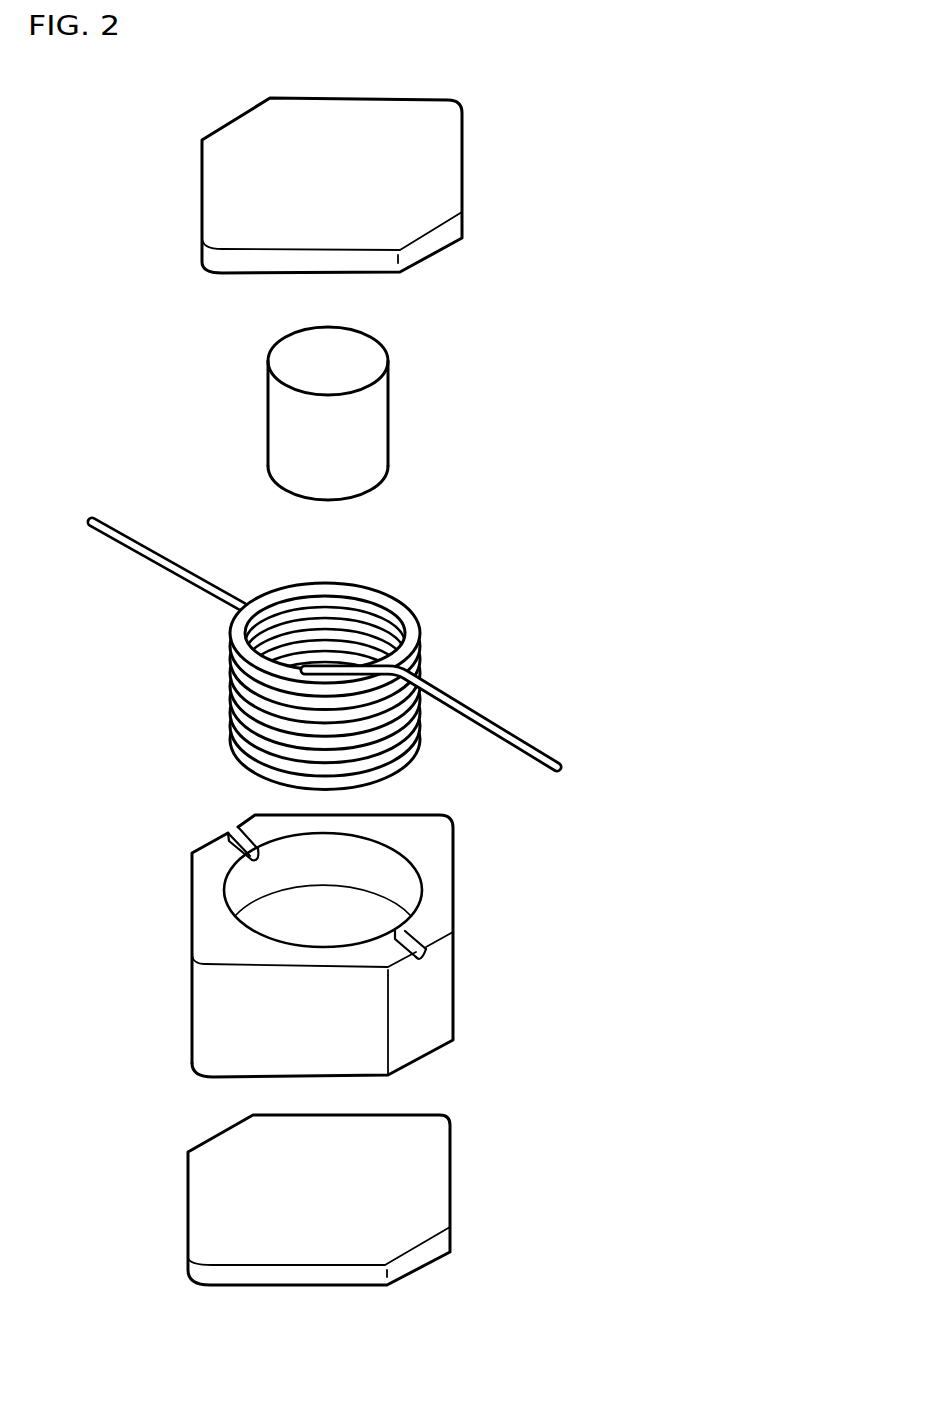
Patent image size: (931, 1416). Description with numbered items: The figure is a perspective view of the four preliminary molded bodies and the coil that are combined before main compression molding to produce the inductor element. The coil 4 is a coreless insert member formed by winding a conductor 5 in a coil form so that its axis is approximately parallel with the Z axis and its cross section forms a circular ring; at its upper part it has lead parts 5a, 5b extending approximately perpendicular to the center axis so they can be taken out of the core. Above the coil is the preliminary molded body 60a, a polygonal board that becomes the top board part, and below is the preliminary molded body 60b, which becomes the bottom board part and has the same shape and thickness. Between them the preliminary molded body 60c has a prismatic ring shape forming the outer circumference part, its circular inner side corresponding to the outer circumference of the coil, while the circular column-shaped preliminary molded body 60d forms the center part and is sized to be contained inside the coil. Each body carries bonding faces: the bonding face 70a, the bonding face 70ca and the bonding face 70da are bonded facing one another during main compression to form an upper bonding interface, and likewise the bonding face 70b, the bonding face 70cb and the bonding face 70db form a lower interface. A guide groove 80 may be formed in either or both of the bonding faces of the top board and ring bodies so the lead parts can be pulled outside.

The coil 4 is at (329, 623).
The conductor 5 is at (265, 768).
The lead part 5a is at (143, 550).
The lead part 5b is at (495, 717).
The preliminary molded body 60a is at (389, 183).
The bonding face 70a is at (430, 257).
The preliminary molded body 60b is at (327, 1200).
The bonding face 70b is at (212, 1183).
The preliminary molded body 60c is at (322, 951).
The bonding face 70ca is at (216, 929).
The bonding face 70cb is at (227, 1077).
The preliminary molded body 60d is at (400, 414).
The bonding face 70da is at (363, 358).
The bonding face 70db is at (373, 492).
The guide groove 80 is at (232, 822).